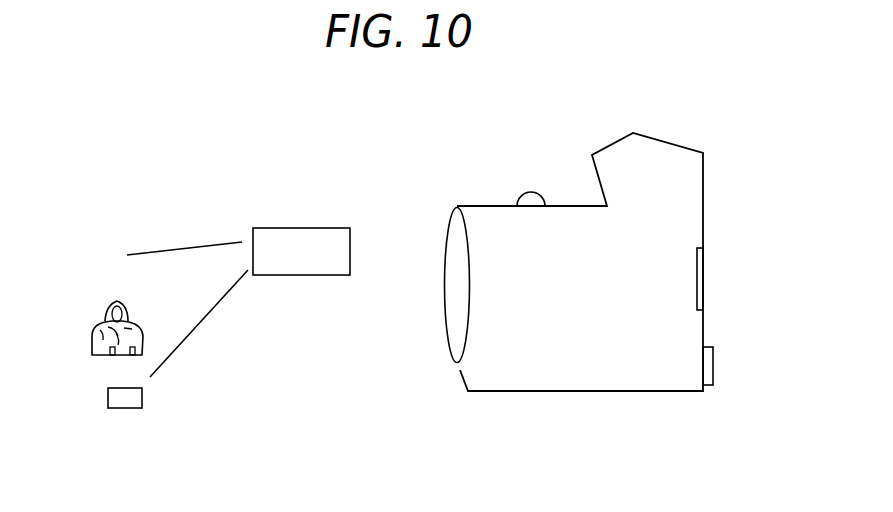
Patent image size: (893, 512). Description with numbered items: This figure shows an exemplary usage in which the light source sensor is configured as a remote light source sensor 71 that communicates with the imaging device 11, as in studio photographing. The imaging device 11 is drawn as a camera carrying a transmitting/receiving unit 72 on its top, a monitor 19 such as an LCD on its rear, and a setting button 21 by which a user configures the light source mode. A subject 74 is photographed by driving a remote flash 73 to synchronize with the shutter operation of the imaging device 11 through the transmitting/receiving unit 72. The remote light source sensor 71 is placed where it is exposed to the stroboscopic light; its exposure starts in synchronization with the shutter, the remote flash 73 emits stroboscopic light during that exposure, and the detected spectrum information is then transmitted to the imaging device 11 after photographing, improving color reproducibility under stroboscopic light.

The imaging device 11 is at (685, 140).
The transmitting/receiving unit 72 is at (527, 192).
The monitor 19 is at (702, 278).
The setting button 21 is at (708, 358).
The remote flash 73 is at (302, 227).
The subject 74 is at (97, 323).
The remote light source sensor 71 is at (108, 398).